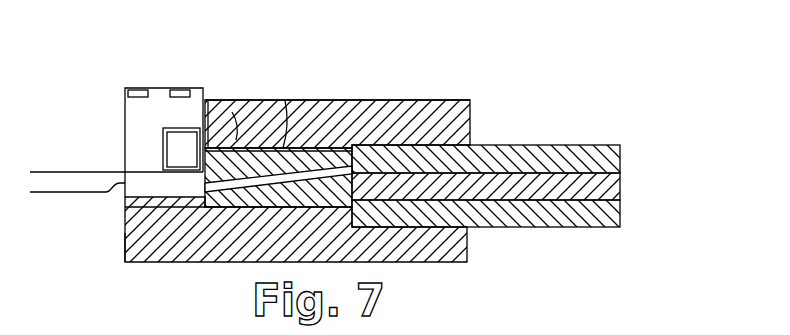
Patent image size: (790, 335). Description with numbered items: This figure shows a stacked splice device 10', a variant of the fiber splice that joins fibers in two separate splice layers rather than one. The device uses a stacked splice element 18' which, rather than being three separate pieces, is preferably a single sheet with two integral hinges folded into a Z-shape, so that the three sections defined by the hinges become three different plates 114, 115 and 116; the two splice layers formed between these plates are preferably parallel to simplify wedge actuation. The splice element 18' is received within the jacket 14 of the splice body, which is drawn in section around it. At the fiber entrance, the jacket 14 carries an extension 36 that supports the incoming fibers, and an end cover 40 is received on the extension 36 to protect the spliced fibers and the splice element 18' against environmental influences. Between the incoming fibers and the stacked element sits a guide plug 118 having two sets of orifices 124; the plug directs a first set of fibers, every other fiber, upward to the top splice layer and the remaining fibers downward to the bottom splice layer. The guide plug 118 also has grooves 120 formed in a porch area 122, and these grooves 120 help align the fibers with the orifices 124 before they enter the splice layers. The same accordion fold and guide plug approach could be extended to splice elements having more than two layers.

The stacked splice device 10' is at (361, 52).
The jacket 14 is at (326, 100).
The stacked splice element 18' is at (516, 147).
The extension 36 is at (124, 233).
The end cover 40 is at (143, 120).
The plate 114 is at (617, 157).
The plate 115 is at (617, 188).
The plate 116 is at (617, 224).
The guide plug 118 is at (240, 112).
The grooves 120 is at (125, 197).
The porch area 122 is at (296, 229).
The orifices 124 is at (283, 142).